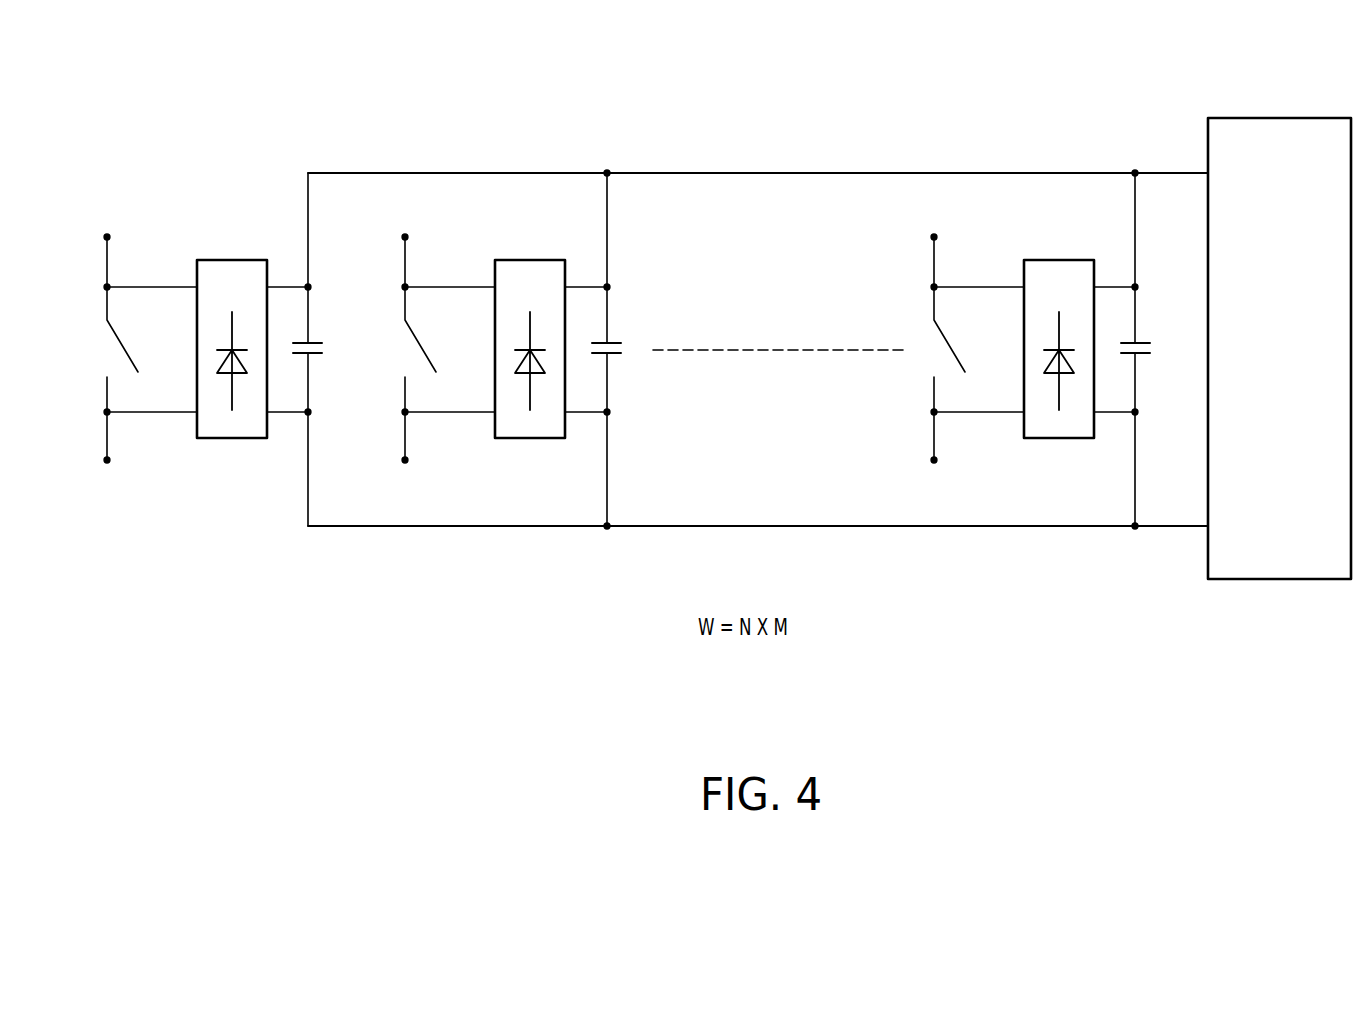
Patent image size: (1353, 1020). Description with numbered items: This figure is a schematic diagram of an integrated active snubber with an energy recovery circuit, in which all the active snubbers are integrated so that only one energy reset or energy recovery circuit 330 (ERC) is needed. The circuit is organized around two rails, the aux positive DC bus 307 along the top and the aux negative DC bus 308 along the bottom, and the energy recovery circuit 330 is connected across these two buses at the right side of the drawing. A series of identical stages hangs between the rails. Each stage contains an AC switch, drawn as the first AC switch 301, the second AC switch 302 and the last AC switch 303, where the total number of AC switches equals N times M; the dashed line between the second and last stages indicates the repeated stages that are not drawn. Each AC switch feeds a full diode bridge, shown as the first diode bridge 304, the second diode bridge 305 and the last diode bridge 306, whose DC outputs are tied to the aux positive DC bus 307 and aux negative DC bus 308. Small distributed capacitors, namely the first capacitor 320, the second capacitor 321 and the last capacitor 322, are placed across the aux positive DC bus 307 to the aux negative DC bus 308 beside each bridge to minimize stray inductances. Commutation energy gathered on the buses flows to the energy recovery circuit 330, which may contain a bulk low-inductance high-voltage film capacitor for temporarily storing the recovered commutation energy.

The switch S1 301 is at (100, 375).
The switch S2 302 is at (400, 375).
The switch SW 303 is at (930, 375).
The diode bridge DB1 304 is at (230, 260).
The diode bridge DB2 305 is at (528, 260).
The diode bridge DBW 306 is at (1058, 260).
The aux +DC bus 307 is at (888, 173).
The aux −DC bus 308 is at (899, 526).
The capacitor C1 320 is at (316, 343).
The capacitor C2 321 is at (616, 343).
The capacitor Cw 322 is at (1144, 343).
The energy recovery circuit 330 is at (1282, 118).